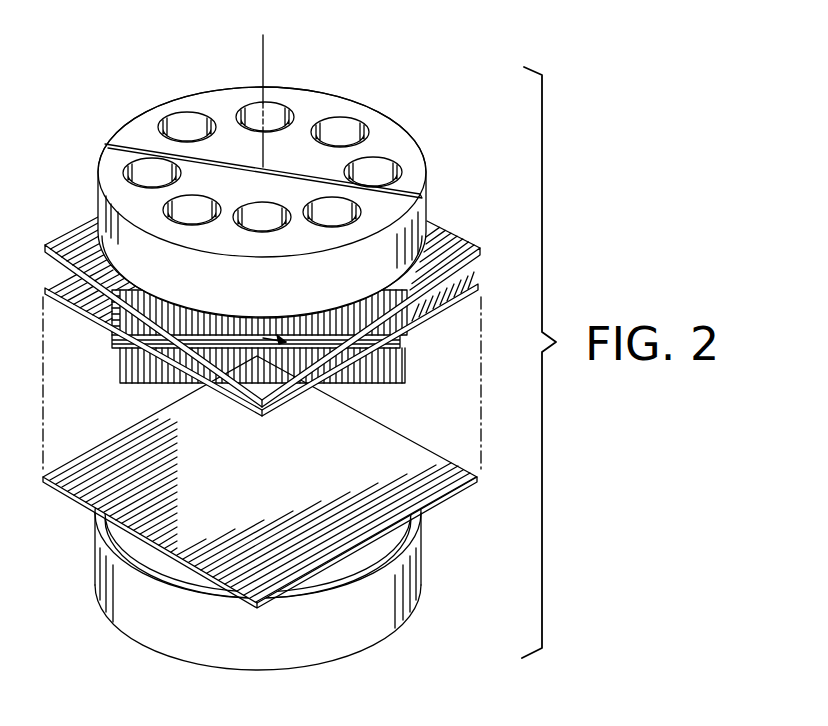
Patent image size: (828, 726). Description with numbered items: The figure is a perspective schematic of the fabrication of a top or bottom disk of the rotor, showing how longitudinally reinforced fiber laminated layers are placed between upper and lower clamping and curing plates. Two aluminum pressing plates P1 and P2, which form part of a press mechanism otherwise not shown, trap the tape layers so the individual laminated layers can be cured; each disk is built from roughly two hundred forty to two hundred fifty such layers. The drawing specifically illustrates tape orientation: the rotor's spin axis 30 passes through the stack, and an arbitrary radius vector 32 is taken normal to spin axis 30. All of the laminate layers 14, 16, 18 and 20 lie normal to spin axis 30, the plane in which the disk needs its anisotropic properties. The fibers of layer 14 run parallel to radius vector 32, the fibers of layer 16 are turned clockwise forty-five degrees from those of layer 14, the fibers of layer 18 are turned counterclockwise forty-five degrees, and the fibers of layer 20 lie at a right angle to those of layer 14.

The laminate layer 14 is at (467, 240).
The laminate layer 16 is at (393, 318).
The laminate layer 18 is at (385, 360).
The laminate layer 20 is at (347, 367).
The spin axis 30 is at (263, 60).
The radius vector 32 is at (266, 334).
The pressing plate P1 is at (392, 143).
The pressing plate P2 is at (281, 656).